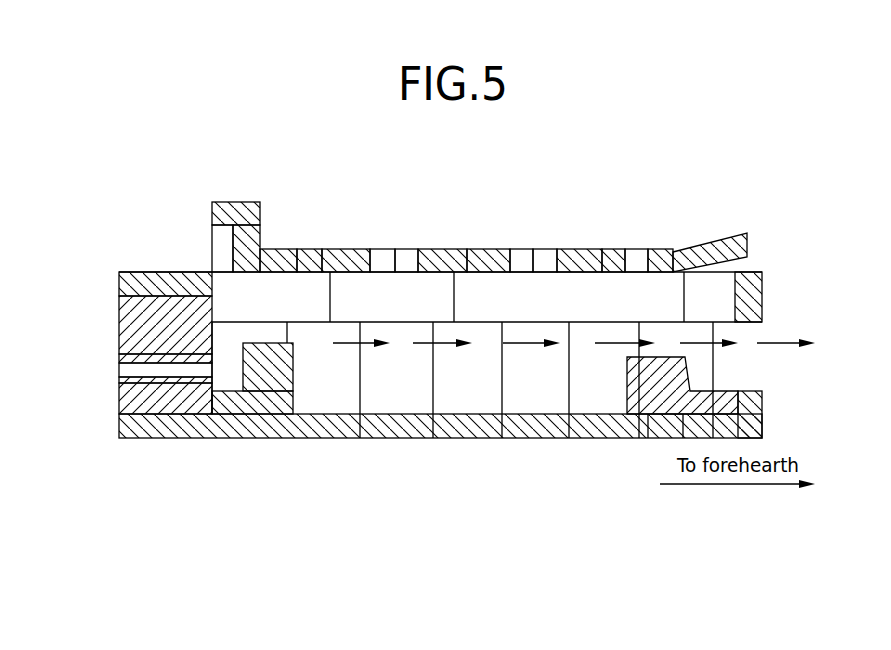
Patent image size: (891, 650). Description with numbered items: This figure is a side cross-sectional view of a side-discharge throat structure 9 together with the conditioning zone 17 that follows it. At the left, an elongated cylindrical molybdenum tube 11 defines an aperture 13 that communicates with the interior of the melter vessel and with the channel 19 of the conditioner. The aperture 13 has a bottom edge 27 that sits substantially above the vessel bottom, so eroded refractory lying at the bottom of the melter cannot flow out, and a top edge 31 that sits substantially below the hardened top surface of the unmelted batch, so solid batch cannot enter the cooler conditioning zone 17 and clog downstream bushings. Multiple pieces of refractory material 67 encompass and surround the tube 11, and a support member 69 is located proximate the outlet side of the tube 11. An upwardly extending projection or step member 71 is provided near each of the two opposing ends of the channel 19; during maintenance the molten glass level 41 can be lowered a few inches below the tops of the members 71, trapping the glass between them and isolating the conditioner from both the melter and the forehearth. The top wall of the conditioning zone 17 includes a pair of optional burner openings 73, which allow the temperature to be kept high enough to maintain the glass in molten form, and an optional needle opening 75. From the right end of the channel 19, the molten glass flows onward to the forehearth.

The throat structure 9 is at (110, 264).
The molybdenum tube 11 is at (132, 380).
The aperture 13 is at (133, 372).
The conditioning zone 17 is at (780, 175).
The channel 19 is at (469, 392).
The bottom edge 27 is at (185, 375).
The top edge 31 is at (170, 362).
The molten glass level 41 is at (266, 320).
The refractory material 67 is at (175, 310).
The support member 69 is at (272, 408).
The step member 71 is at (296, 360).
The burner openings 73 is at (523, 260).
The needle opening 75 is at (636, 262).